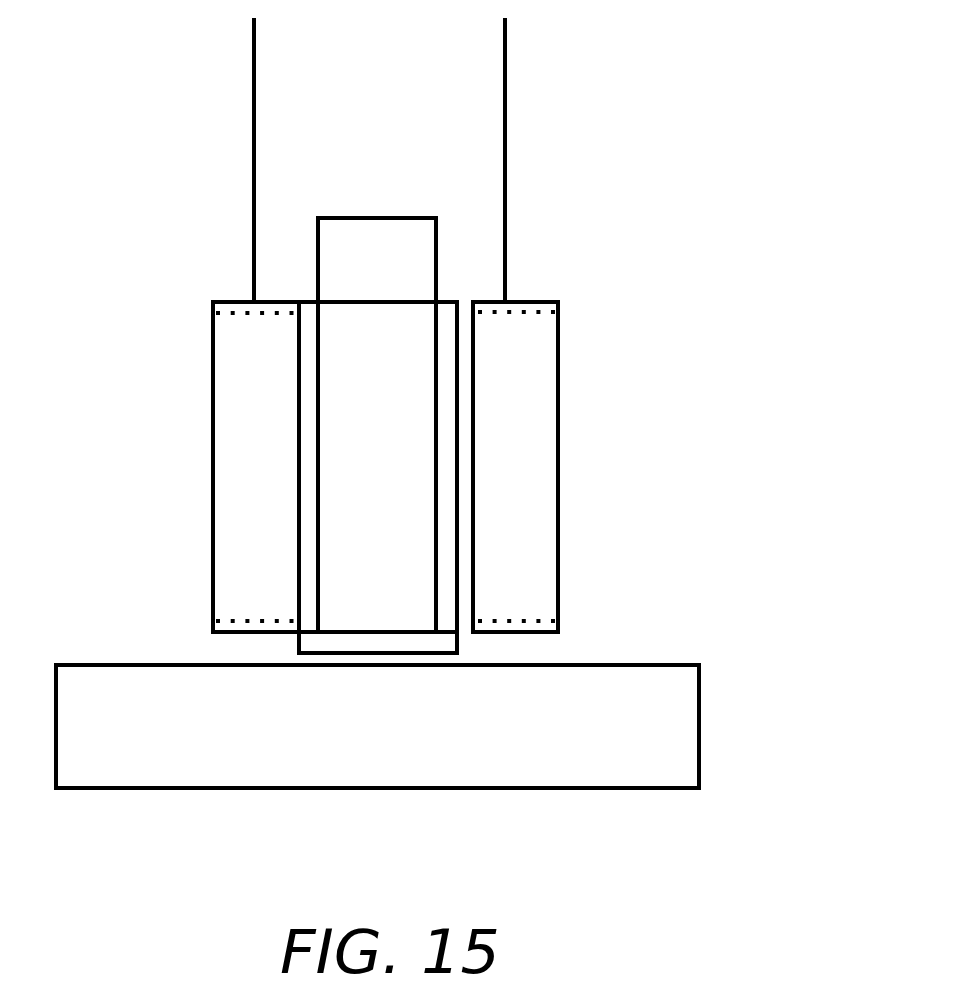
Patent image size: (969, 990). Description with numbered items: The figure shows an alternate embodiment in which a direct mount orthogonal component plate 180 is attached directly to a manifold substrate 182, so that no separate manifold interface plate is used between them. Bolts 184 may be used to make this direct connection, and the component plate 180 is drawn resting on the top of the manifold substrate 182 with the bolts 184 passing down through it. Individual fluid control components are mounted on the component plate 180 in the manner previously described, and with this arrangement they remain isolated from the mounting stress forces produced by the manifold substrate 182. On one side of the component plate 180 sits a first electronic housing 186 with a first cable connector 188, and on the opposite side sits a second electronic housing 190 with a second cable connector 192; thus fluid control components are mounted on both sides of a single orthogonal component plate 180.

The direct mount orthogonal component plate 180 is at (287, 477).
The manifold substrate 182 is at (448, 726).
The bolts 184 is at (379, 378).
The first electronic housing 186 is at (197, 467).
The first cable connector 188 is at (201, 160).
The second electronic housing 190 is at (585, 467).
The second cable connector 192 is at (568, 160).